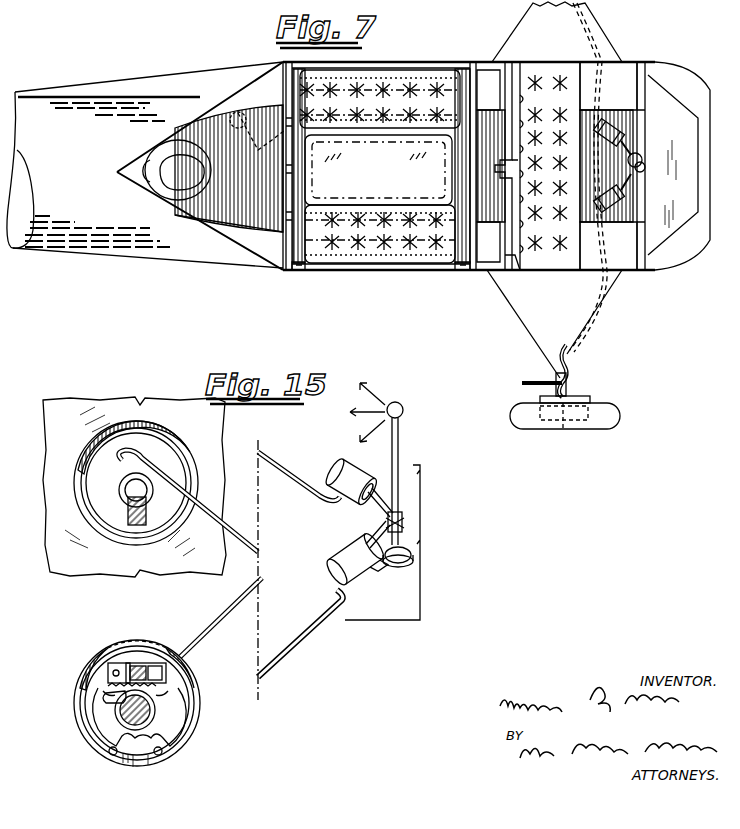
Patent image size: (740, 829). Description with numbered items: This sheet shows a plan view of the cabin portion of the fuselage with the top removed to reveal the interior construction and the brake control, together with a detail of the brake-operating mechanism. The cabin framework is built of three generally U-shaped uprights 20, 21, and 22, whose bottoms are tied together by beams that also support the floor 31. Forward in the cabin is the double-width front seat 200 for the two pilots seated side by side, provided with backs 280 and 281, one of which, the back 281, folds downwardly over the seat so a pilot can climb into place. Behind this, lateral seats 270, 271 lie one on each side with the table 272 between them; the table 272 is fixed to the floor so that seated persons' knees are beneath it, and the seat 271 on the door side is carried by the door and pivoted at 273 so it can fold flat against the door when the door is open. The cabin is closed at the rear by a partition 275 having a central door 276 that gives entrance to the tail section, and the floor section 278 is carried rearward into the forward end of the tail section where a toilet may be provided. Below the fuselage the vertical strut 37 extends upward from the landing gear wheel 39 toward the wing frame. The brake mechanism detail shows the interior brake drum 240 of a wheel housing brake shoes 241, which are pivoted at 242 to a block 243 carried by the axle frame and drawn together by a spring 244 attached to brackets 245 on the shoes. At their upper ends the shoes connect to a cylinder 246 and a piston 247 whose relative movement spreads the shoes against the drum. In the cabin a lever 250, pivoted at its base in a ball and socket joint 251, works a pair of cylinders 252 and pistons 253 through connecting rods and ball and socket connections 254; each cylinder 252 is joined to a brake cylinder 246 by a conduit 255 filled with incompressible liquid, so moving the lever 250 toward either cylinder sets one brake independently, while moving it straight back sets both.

In FIG. 7, the upright 20 is at (656, 62).
In FIG. 7, the upright 21 is at (484, 62).
In FIG. 7, the upright 22 is at (302, 66).
In FIG. 7, the vertical strut 37 is at (532, 383).
In FIG. 7, the landing gear wheel 39 is at (612, 410).
In FIG. 7, the front seat 200 is at (590, 62).
In FIG. 7, the brake drum 240 is at (590, 398).
In FIG. 15, the brake drum 240 is at (188, 455).
In FIG. 15, the brake shoes 241 is at (90, 733).
In FIG. 15, the pivot 242 is at (110, 760).
In FIG. 15, the block 243 is at (146, 766).
In FIG. 15, the spring 244 is at (163, 706).
In FIG. 15, the brackets 245 is at (108, 706).
In FIG. 15, the cylinder 246 is at (118, 668).
In FIG. 15, the piston 247 is at (158, 668).
In FIG. 15, the lever 250 is at (400, 430).
In FIG. 15, the ball and socket joint 251 is at (412, 557).
In FIG. 15, the cylinders 252 is at (333, 547).
In FIG. 15, the pistons 253 is at (388, 514).
In FIG. 15, the ball and socket connections 254 is at (402, 521).
In FIG. 7, the conduit 255 is at (568, 358).
In FIG. 15, the conduit 255 is at (290, 518).
In FIG. 7, the lateral seat 270 is at (380, 99).
In FIG. 7, the lateral seat 271 is at (380, 234).
In FIG. 7, the table 272 is at (378, 170).
In FIG. 7, the pivot 273 is at (303, 272).
In FIG. 7, the partition 275 is at (285, 91).
In FIG. 7, the door 276 is at (240, 110).
In FIG. 7, the floor section 278 is at (245, 220).
In FIG. 7, the seat back 280 is at (525, 66).
In FIG. 7, the seat back 281 is at (510, 272).
In FIG. 15, the floor 31 is at (420, 588).